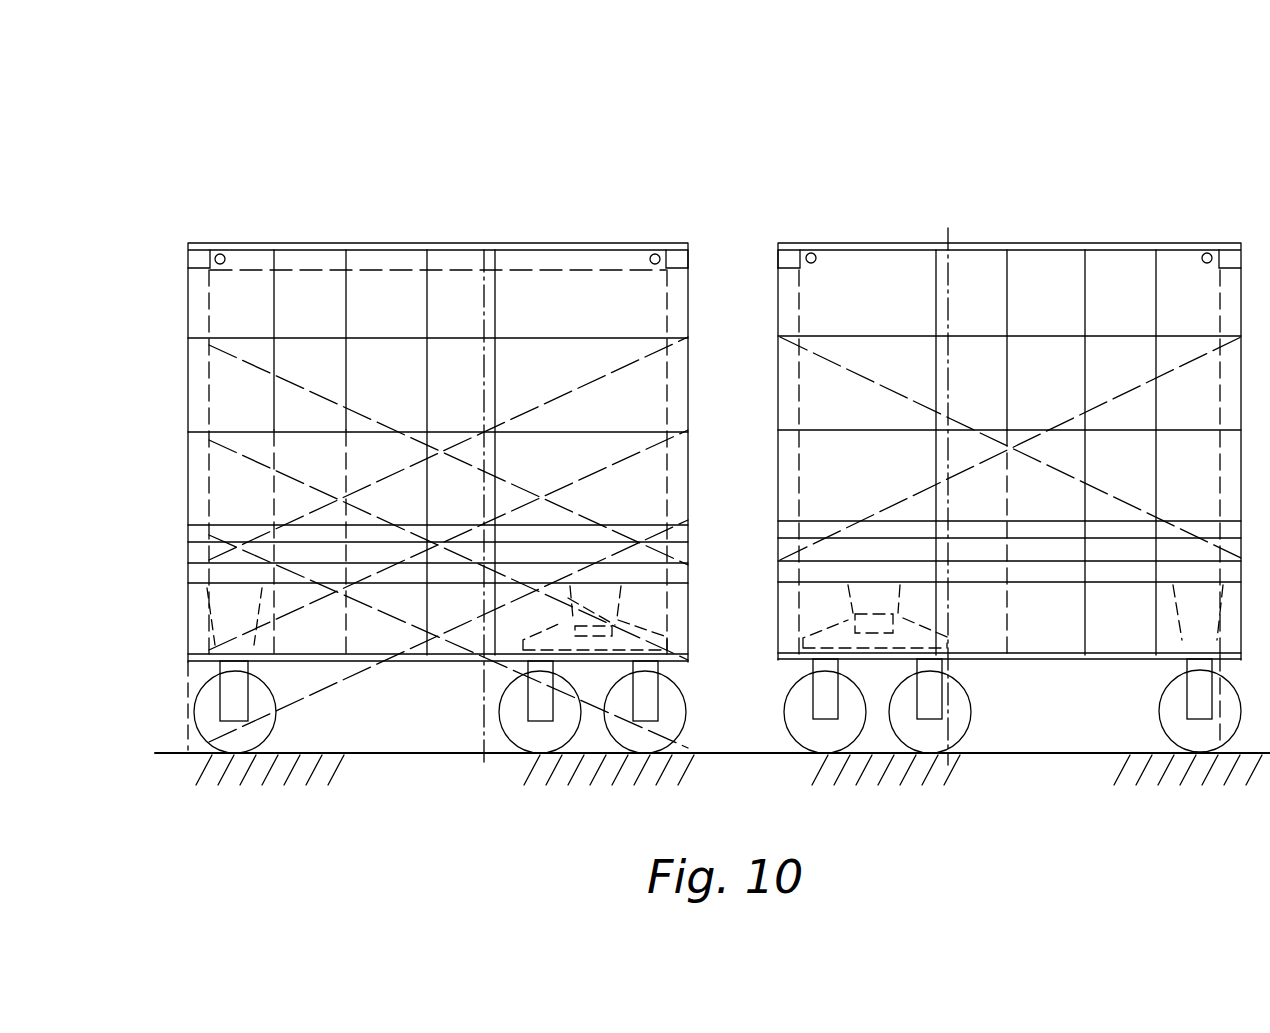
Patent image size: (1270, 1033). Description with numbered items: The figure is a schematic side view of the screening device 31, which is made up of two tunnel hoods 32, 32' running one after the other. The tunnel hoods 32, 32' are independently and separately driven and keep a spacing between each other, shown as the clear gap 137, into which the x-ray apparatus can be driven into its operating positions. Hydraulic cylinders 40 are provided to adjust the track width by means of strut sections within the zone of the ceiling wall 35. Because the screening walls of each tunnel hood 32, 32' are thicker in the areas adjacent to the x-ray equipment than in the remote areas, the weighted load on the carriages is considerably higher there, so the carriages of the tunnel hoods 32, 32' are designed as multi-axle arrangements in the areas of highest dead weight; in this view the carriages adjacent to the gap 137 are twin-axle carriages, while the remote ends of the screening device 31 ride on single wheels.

The screening device 31 is at (624, 130).
The tunnel hood 32 is at (438, 468).
The tunnel hood 32' is at (1009, 467).
The ceiling wall 35 is at (345, 245).
The hydraulic cylinder 40 is at (222, 254).
The clear gap 137 is at (742, 262).